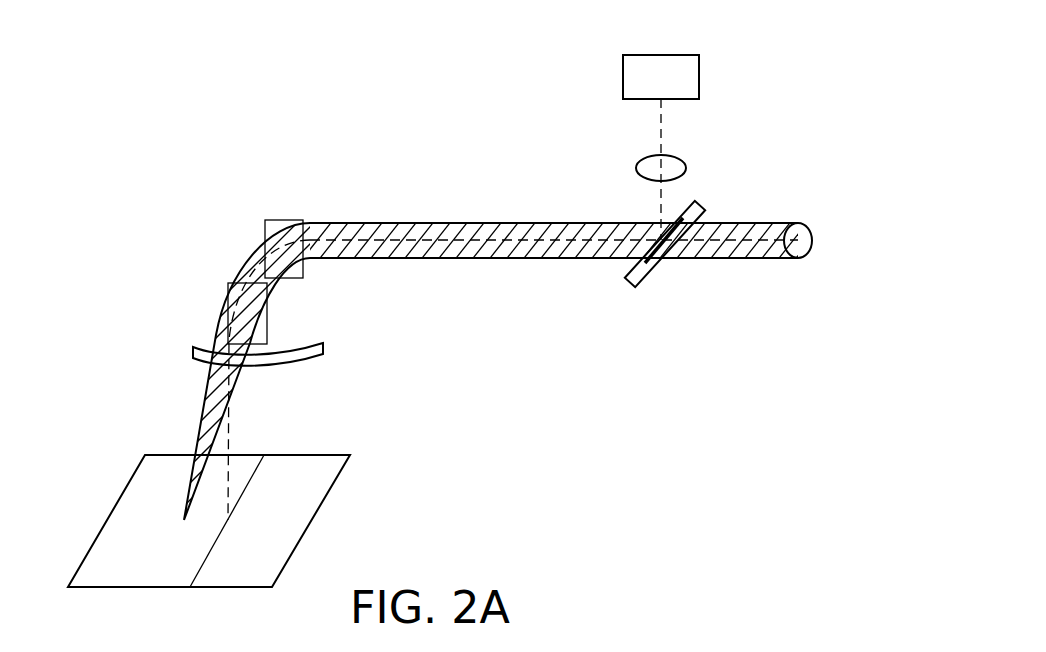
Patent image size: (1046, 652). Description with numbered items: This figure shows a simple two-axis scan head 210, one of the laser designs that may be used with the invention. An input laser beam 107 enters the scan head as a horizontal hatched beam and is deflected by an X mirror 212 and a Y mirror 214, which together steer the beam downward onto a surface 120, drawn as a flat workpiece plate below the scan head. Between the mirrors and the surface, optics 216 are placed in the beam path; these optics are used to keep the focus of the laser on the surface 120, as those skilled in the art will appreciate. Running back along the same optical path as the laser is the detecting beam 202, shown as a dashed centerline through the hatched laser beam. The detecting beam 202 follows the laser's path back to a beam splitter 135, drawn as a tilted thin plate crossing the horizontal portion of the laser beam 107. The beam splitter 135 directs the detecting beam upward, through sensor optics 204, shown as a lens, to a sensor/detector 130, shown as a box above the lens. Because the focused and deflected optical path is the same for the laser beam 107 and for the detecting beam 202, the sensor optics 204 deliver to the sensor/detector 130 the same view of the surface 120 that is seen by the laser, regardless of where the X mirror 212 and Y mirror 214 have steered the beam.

The laser beam 107 is at (762, 259).
The detecting beam 202 is at (230, 435).
The sensor/detector 130 is at (621, 64).
The sensor optics 204 is at (638, 163).
The beam splitter 135 is at (704, 205).
The 2-axis scan head 210 is at (759, 72).
The X mirror 212 is at (265, 222).
The Y mirror 214 is at (235, 282).
The optics 216 is at (196, 345).
The surface 120 is at (315, 518).